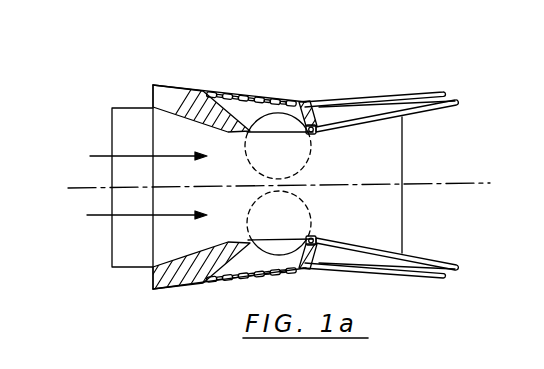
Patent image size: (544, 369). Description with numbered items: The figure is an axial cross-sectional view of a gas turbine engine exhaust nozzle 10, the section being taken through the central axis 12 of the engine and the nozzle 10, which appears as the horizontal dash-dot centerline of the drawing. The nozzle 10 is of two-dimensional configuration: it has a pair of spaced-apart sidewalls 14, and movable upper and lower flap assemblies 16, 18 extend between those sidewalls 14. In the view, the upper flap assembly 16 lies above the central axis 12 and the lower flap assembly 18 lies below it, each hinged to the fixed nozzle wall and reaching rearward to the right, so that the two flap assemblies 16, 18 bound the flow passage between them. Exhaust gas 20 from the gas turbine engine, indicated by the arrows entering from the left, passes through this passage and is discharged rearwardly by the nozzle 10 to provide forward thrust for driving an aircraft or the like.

The exhaust nozzle 10 is at (384, 80).
The central axis 12 is at (462, 184).
The sidewalls 14 is at (364, 164).
The upper flap assembly 16 is at (423, 113).
The lower flap assembly 18 is at (419, 250).
The exhaust gas 20 is at (100, 218).